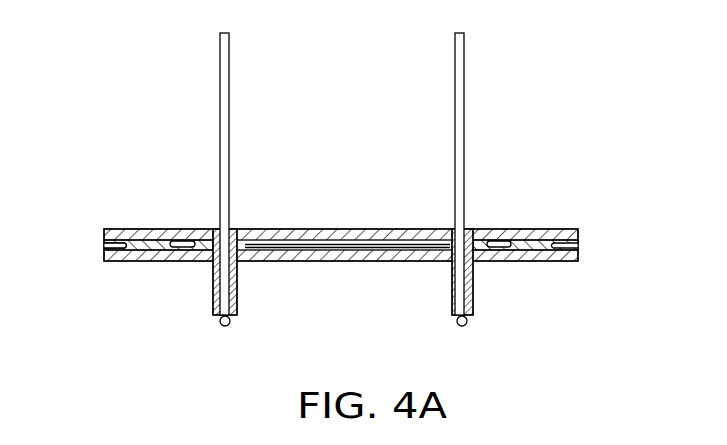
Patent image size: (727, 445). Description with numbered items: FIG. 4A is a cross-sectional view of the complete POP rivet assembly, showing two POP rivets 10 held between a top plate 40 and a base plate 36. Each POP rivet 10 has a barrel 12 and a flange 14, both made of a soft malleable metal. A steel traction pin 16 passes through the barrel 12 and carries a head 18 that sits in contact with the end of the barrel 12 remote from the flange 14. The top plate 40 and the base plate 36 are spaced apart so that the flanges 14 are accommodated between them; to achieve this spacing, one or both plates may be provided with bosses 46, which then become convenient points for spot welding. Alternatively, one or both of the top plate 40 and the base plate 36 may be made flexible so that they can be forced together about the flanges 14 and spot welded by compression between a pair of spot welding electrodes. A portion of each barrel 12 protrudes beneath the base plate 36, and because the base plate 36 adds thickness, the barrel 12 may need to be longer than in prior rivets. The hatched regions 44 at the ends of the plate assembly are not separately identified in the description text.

The POP rivet 10 is at (369, 174).
The barrel 12 is at (213, 290).
The flange 14 is at (243, 240).
The traction pin 16 is at (229, 125).
The head 18 is at (230, 325).
The base plate 36 is at (362, 262).
The top plate 40 is at (378, 237).
The end plate section 44 is at (148, 237).
The boss 46 is at (118, 246).